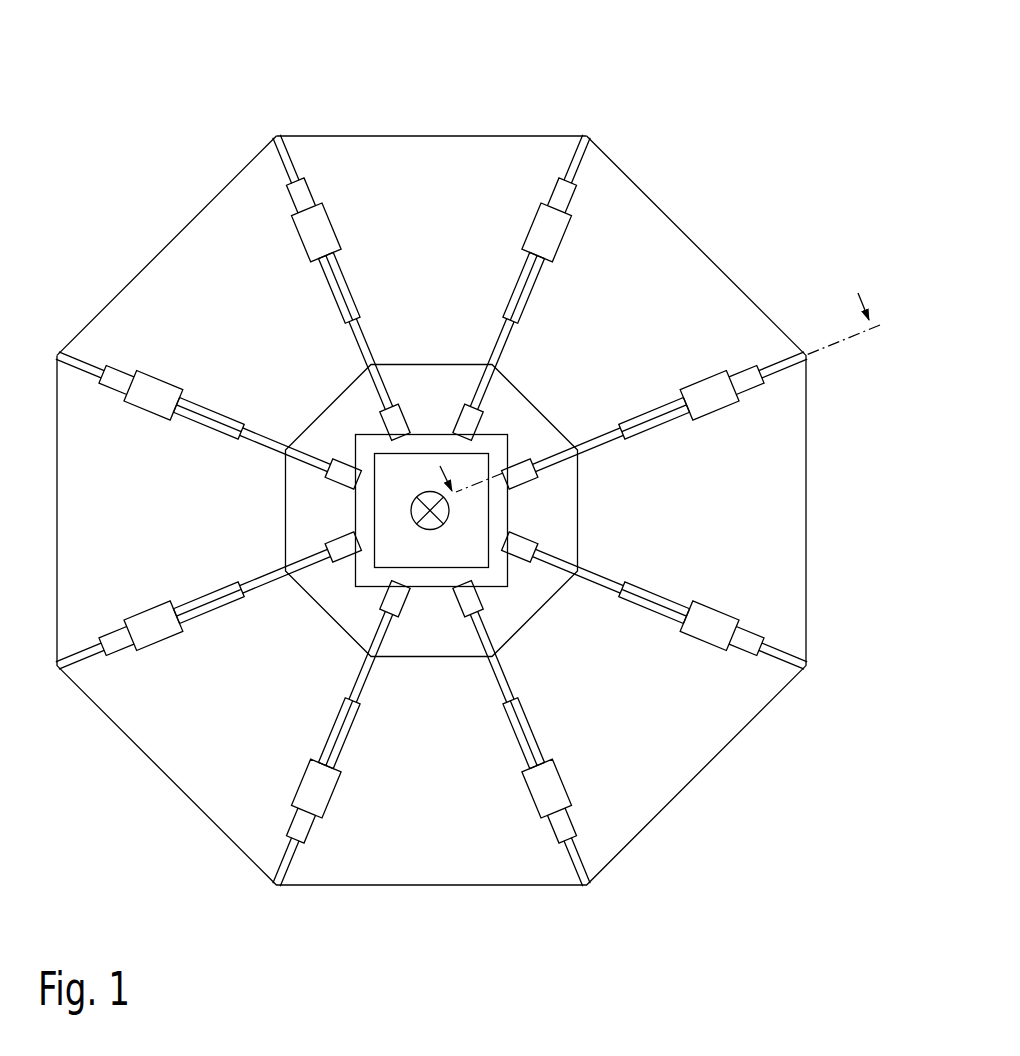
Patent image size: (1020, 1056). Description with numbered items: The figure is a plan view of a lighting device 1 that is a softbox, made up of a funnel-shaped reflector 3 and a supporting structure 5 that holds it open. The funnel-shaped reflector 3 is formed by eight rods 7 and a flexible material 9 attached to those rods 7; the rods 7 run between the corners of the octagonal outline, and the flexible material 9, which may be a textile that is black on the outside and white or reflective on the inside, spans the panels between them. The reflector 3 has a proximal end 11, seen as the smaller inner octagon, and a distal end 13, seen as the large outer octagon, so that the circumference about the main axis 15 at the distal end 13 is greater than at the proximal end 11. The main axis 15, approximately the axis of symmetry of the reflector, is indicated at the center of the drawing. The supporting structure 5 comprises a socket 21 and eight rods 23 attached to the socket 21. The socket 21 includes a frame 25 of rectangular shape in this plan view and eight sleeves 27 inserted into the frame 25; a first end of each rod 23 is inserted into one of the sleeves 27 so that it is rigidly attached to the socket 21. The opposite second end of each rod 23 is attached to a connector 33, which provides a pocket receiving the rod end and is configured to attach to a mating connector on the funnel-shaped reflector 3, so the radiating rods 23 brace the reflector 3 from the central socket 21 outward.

The lighting device 1 is at (717, 99).
The funnel-shaped reflector 3 is at (378, 112).
The supporting structure 5 is at (420, 590).
The rods 7 is at (279, 147).
The flexible material 9 is at (223, 285).
The proximal end 11 is at (463, 364).
The distal end 13 is at (502, 135).
The main axis 15 is at (428, 527).
The socket 21 is at (497, 440).
The rods 23 is at (367, 344).
The frame 25 is at (368, 436).
The sleeves 27 is at (396, 418).
The connector 33 is at (326, 231).